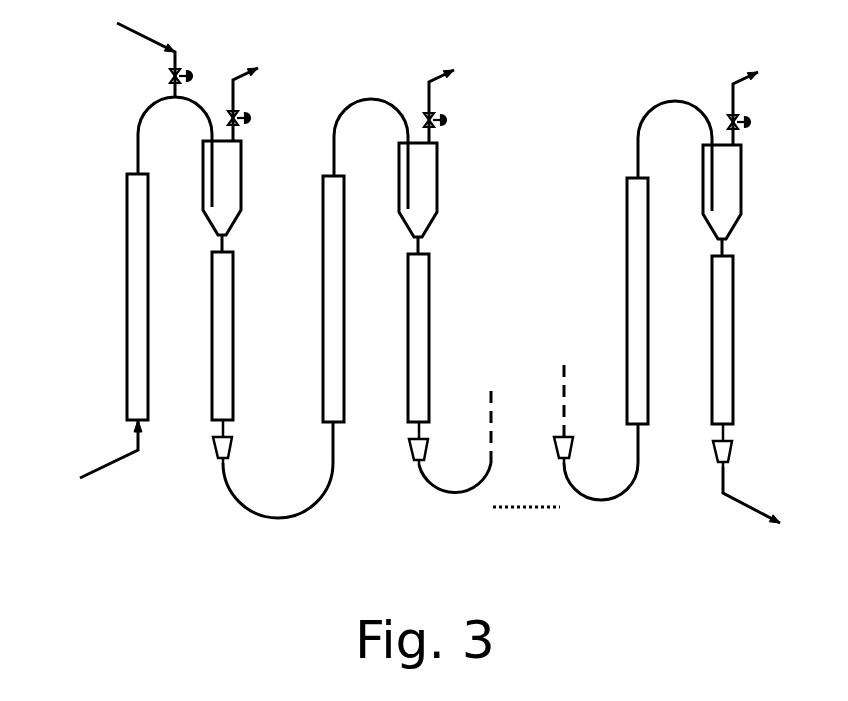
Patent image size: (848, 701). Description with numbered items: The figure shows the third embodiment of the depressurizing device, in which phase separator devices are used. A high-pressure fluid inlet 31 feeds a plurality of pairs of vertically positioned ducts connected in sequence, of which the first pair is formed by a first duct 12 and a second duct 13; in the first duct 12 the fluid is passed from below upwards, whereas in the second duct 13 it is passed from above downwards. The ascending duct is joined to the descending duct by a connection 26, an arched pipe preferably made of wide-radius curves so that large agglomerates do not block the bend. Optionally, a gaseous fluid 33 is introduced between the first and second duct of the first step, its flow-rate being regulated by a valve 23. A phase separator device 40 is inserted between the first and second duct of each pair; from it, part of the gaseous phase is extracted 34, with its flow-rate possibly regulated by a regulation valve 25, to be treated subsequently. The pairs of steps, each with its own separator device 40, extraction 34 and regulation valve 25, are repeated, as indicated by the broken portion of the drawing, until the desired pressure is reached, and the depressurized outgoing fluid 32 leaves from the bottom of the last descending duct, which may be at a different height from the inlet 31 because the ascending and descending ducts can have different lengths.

The first duct 12 is at (127, 383).
The second duct 13 is at (212, 383).
The valve 23 is at (195, 74).
The regulation valve 25 is at (251, 117).
The connection between the ascending and descending duct 26 is at (135, 118).
The high-pressure fluid inlet 31 is at (80, 469).
The outgoing fluid 32 is at (781, 519).
The gaseous fluid 33 is at (124, 34).
The extracted gaseous phase 34 is at (262, 72).
The phase separator device 40 is at (233, 190).